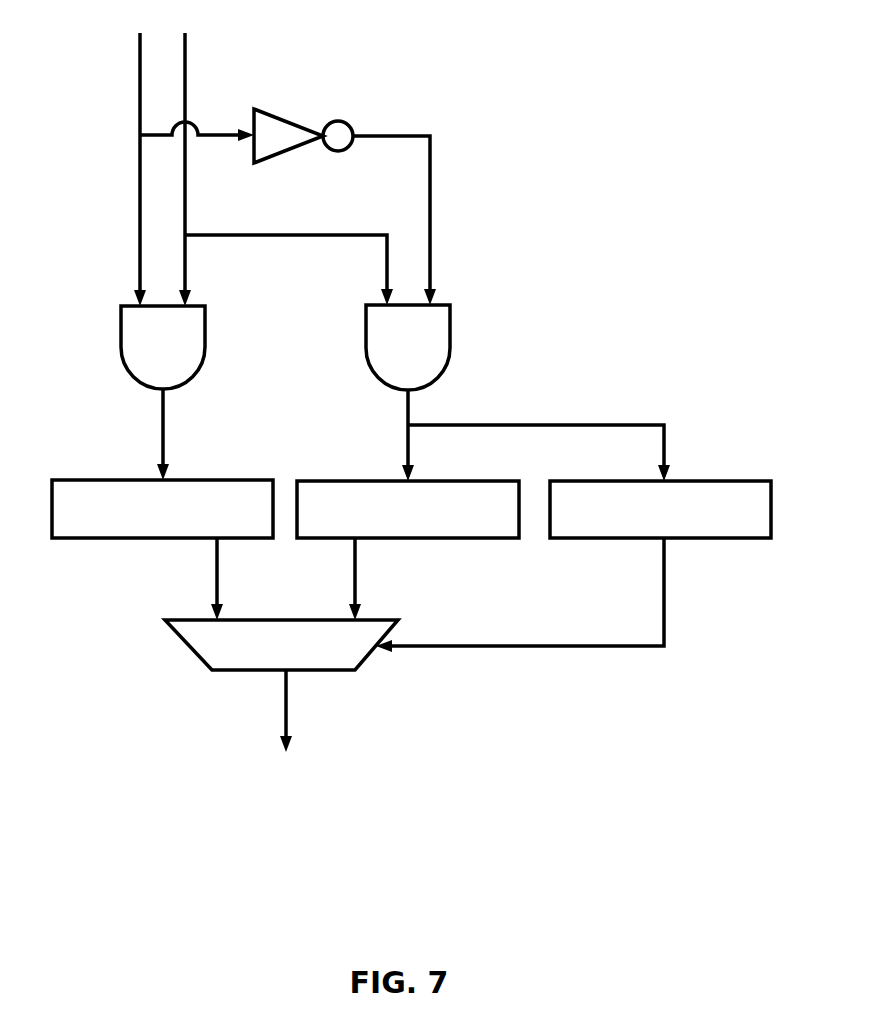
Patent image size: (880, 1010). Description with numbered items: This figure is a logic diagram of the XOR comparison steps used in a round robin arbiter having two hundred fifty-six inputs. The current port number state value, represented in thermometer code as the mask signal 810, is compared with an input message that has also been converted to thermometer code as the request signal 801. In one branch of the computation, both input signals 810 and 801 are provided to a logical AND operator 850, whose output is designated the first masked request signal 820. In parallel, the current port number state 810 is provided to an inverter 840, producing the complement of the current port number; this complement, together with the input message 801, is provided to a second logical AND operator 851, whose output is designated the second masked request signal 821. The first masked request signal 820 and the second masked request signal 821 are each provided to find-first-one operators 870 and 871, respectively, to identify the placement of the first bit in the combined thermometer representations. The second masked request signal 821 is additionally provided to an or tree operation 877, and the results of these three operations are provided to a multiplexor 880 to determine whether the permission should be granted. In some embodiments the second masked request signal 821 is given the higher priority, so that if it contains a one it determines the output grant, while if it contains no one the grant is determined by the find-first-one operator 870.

The mask[255:0] 810 is at (138, 72).
The req[255:0] 801 is at (188, 72).
The inverter 840 is at (293, 128).
The logical AND operator 850 is at (120, 330).
The second logical AND operator 851 is at (452, 336).
The req_mask_0 820 is at (163, 440).
The req_mask_1 821 is at (412, 410).
The find_first_1 operator 870 is at (88, 479).
The find_first_1 operator 871 is at (365, 479).
The or tree operation 877 is at (703, 479).
The multiplexor 880 is at (165, 620).